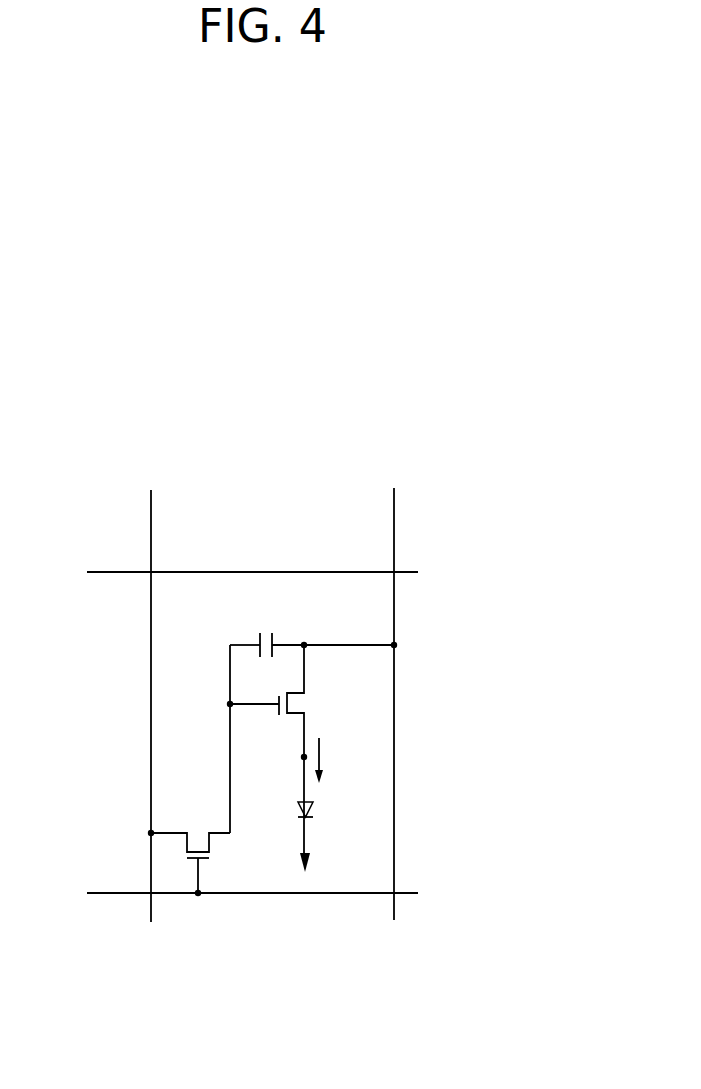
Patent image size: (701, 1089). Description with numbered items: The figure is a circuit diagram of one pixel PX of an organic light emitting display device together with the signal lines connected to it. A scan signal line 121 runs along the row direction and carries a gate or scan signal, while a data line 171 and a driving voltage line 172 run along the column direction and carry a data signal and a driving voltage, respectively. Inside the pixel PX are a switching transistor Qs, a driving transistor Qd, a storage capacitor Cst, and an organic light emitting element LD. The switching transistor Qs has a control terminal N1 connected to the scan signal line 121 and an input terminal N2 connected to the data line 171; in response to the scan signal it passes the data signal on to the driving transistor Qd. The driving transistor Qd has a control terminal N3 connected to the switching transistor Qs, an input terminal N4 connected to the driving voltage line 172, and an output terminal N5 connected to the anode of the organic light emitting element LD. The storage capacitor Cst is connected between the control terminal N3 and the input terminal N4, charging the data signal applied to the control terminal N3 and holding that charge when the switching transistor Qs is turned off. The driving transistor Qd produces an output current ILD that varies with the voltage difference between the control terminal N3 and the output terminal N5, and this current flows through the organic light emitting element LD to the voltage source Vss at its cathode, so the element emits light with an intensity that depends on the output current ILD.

The data line 171 is at (152, 690).
The driving voltage line 172 is at (396, 689).
The scan signal line 121 is at (231, 892).
The pixel PX is at (195, 606).
The switching transistor Qs is at (190, 847).
The driving transistor Qd is at (288, 701).
The storage capacitor Cst is at (312, 628).
The organic light emitting element LD is at (322, 806).
The control terminal N1 is at (198, 911).
The input terminal N2 is at (134, 835).
The control terminal N3 is at (211, 704).
The input terminal N4 is at (344, 629).
The output terminal N5 is at (288, 757).
The output current ILD is at (337, 760).
The voltage source Vss is at (327, 867).